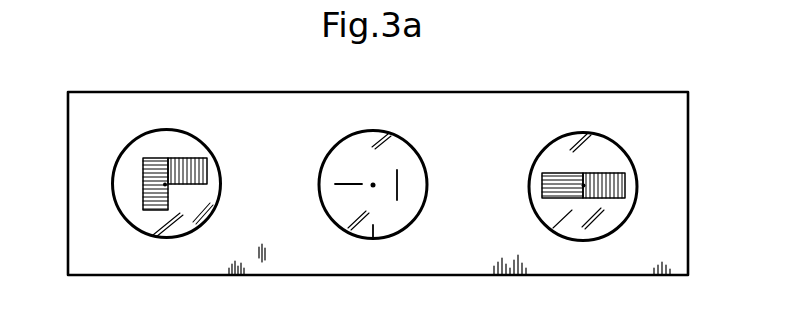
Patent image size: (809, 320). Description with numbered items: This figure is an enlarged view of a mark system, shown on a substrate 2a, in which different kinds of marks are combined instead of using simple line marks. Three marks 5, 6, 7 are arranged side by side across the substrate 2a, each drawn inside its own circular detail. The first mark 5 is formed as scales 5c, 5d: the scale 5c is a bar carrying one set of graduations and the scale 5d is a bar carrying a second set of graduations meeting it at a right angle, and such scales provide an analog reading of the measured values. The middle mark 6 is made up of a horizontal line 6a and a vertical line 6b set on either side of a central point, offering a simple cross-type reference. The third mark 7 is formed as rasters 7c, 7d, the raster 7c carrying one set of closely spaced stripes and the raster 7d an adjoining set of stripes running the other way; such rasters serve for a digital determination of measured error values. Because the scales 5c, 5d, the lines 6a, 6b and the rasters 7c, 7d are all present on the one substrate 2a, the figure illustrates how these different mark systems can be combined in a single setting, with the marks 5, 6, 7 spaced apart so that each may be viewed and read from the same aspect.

The substrate plate 2a is at (78, 252).
The mark 5 is at (122, 194).
The scale 5c is at (143, 169).
The scale 5d is at (206, 168).
The mark 6 is at (372, 240).
The horizontal line of second mark 6a is at (345, 184).
The vertical line of second mark 6b is at (398, 182).
The mark 7 is at (613, 216).
The raster 7c is at (546, 188).
The raster 7d is at (624, 184).